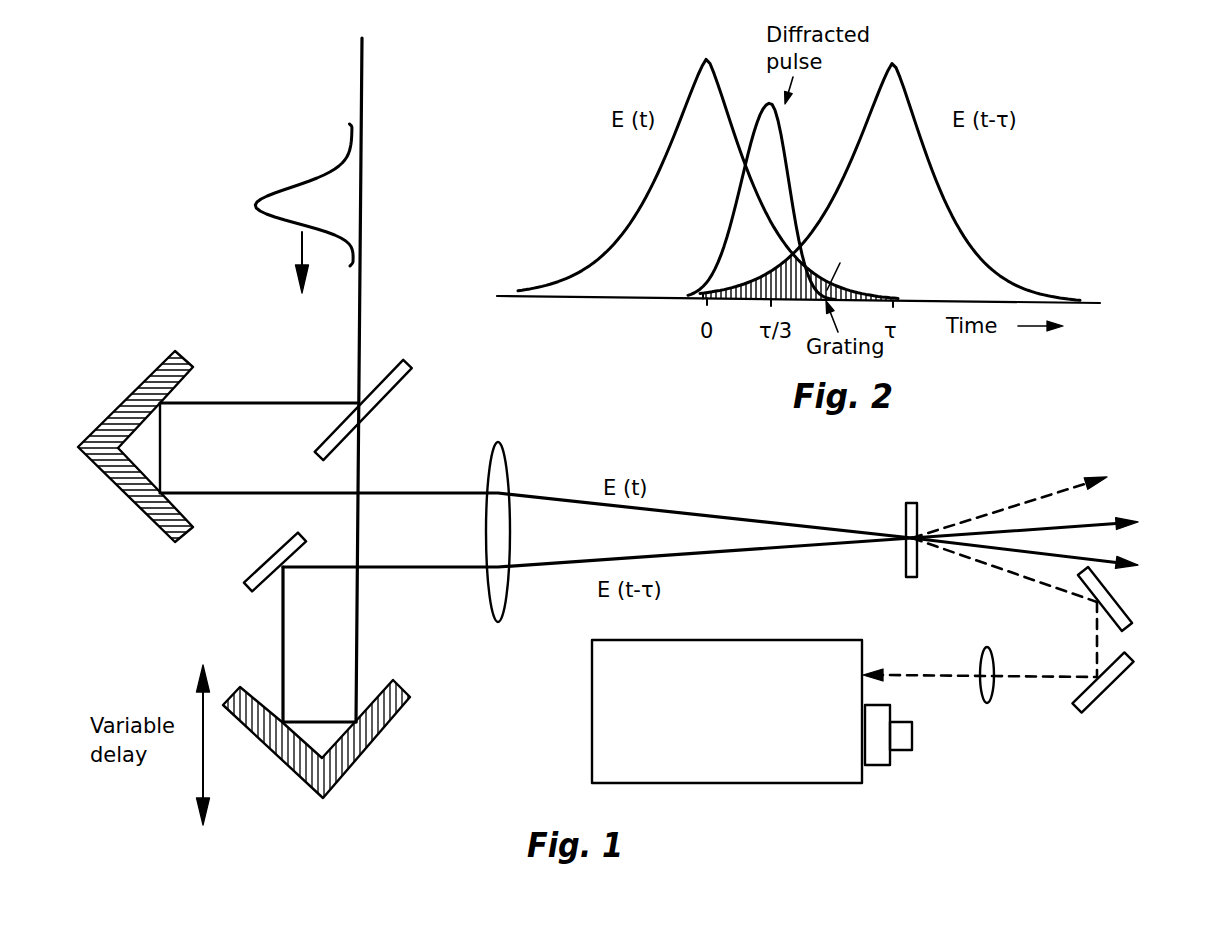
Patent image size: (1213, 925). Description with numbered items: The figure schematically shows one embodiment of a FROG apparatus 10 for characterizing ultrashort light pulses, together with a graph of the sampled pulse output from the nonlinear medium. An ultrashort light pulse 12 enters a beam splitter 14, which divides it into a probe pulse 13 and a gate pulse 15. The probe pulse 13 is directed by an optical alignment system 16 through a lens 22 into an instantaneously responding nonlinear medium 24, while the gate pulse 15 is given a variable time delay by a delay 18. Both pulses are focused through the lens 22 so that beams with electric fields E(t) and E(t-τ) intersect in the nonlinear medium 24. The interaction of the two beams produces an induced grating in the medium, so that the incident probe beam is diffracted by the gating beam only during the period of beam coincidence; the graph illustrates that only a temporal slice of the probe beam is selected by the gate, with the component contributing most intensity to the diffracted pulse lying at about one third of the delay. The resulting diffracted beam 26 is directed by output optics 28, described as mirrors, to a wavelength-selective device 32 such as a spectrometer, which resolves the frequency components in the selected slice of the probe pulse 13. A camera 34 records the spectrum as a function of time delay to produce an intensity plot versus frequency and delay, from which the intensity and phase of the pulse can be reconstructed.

The FROG apparatus 10 is at (152, 306).
The ultrashort light pulse 12 is at (255, 202).
The probe pulse 13 is at (248, 403).
The beam splitter 14 is at (377, 415).
The gate pulse 15 is at (357, 630).
The optical alignment system 16 is at (117, 402).
The delay 18 is at (368, 750).
The lens 22 is at (498, 602).
The nonlinear medium 24 is at (910, 567).
The diffracted beam 26 is at (1155, 533).
The output optics 28 is at (1152, 671).
The wavelength-selective device 32 is at (802, 785).
The camera 34 is at (877, 765).